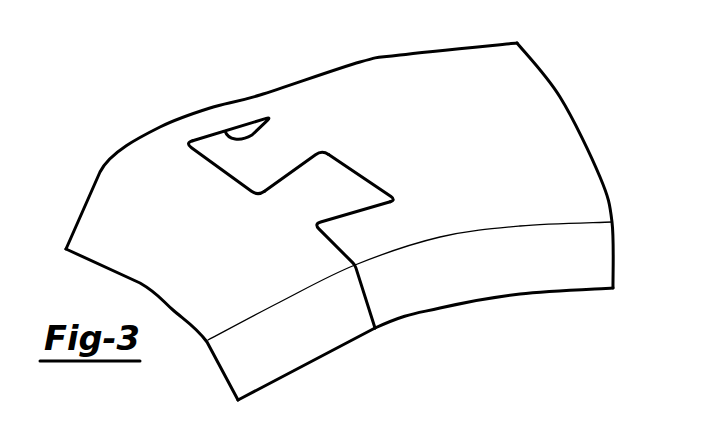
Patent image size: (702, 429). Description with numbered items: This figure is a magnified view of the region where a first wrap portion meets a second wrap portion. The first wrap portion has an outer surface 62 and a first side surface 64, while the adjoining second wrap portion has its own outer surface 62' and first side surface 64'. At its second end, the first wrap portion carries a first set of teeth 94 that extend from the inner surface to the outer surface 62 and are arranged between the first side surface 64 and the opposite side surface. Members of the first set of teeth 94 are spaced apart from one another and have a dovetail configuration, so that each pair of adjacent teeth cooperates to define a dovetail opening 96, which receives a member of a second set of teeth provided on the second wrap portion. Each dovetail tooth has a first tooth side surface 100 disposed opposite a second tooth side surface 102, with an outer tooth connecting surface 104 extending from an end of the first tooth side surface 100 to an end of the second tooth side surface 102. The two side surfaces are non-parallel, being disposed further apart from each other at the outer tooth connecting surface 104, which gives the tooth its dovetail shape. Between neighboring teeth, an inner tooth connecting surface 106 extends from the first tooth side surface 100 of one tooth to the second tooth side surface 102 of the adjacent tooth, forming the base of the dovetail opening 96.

The outer surface 62 is at (153, 308).
The outer surface 62' is at (545, 165).
The first side surface 64 is at (306, 332).
The first side surface 64' is at (484, 293).
The first set of teeth 94 is at (334, 176).
The dovetail opening 96 is at (229, 152).
The first tooth side surface 100 is at (287, 175).
The second tooth side surface 102 is at (241, 137).
The outer tooth connecting surface 104 is at (358, 168).
The inner tooth connecting surface 106 is at (206, 162).